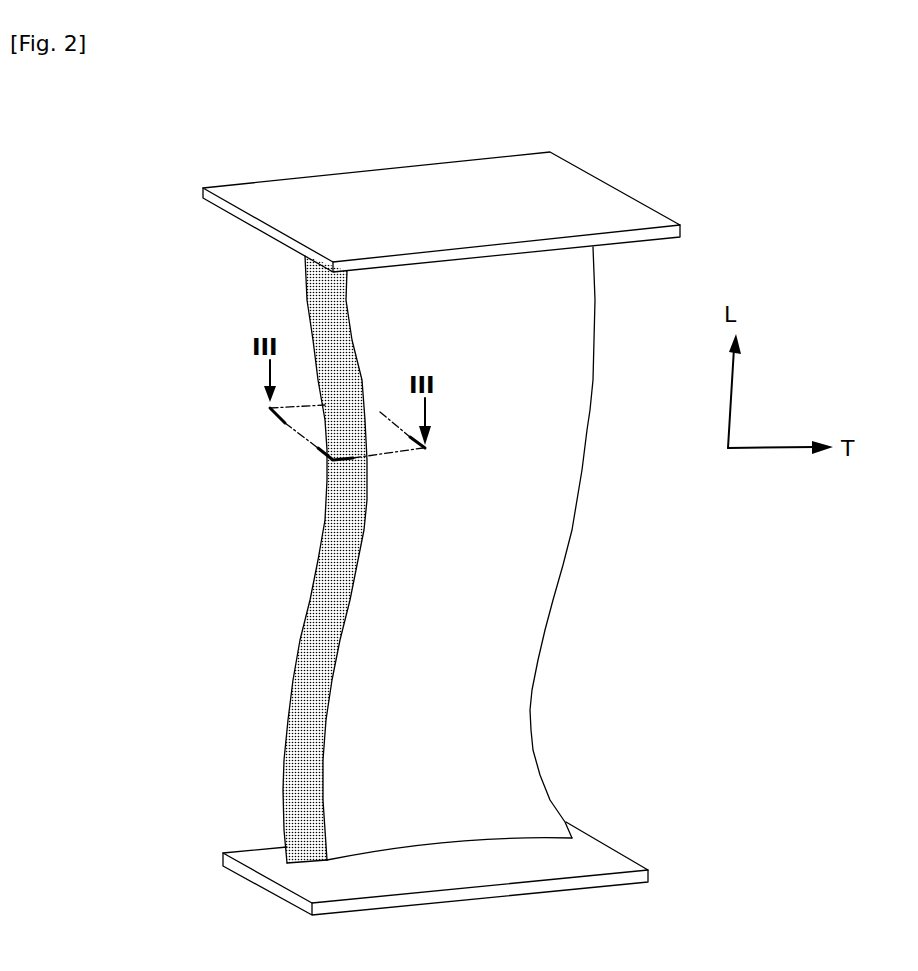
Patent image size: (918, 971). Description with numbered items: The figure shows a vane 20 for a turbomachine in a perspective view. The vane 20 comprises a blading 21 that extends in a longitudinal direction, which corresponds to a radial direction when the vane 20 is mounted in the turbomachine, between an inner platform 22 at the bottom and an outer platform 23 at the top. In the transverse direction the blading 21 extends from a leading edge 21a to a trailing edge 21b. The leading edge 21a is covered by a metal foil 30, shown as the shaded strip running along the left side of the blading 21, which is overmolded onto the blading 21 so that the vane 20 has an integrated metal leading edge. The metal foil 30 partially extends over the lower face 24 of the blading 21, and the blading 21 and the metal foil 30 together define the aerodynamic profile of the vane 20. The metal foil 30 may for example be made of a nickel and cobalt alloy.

The vane 20 is at (160, 353).
The blading 21 is at (518, 655).
The leading edge 21a is at (289, 655).
The trailing edge 21b is at (584, 529).
The inner platform 22 is at (607, 860).
The outer platform 23 is at (603, 198).
The lower face 24 is at (457, 603).
The metal foil 30 is at (343, 511).